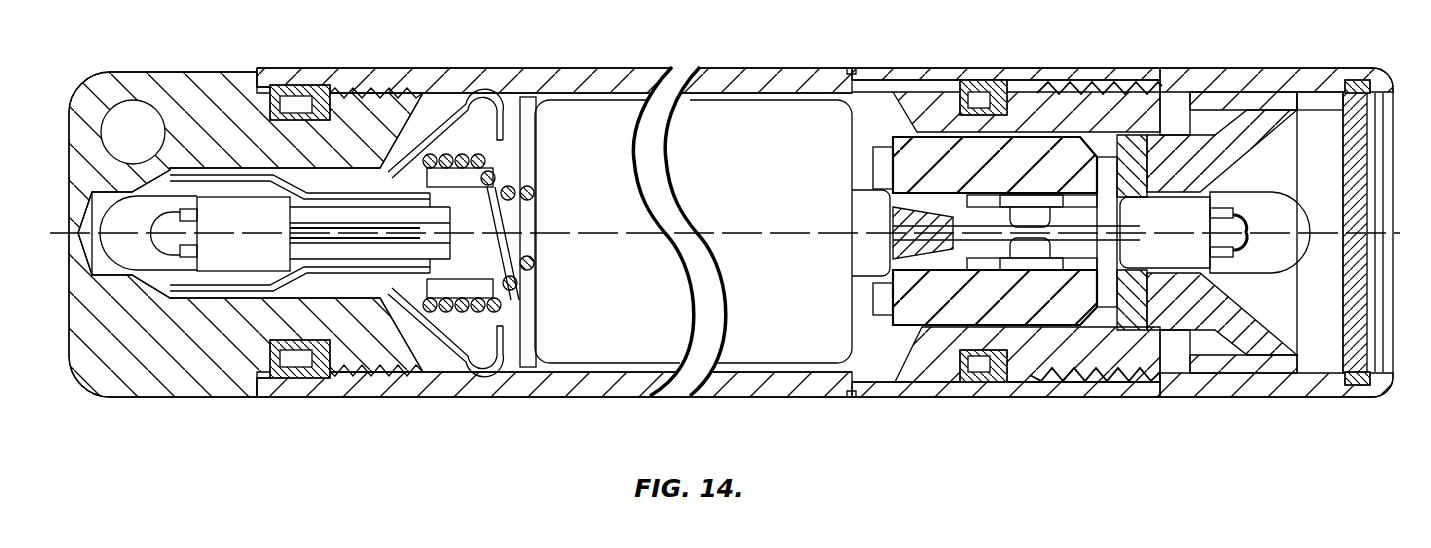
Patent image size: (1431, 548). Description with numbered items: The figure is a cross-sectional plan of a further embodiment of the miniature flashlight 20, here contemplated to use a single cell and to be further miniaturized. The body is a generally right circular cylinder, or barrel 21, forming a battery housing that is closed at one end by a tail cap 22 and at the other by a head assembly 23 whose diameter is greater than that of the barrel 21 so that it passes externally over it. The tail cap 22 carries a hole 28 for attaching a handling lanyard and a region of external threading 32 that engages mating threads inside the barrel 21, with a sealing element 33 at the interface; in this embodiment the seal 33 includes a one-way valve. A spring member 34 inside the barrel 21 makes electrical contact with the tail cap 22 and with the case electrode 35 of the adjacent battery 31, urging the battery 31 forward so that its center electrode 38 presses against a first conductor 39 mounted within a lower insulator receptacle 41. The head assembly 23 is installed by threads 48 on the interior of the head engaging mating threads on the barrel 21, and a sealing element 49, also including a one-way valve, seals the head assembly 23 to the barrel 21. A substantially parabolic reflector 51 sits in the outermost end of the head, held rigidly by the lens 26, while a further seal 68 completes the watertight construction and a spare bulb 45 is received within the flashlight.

The miniature flashlight 20 is at (857, 408).
The barrel 21 is at (790, 68).
The tail cap 22 is at (112, 378).
The head assembly 23 is at (1195, 70).
The lens 26 is at (1365, 152).
The hole 28 is at (121, 114).
The miniature dry cell battery 31 is at (597, 352).
The external threading 32 is at (380, 366).
The sealing element 33 is at (330, 85).
The spring member 34 is at (532, 268).
The case electrode 35 is at (530, 146).
The center electrode 38 is at (863, 200).
The first conductor 39 is at (900, 325).
The lower insulator receptacle 41 is at (1060, 320).
The spare bulb 45 is at (1270, 190).
The threads 48 is at (1080, 85).
The sealing element 49 is at (985, 82).
The substantially parabolic reflector 51 is at (1320, 107).
The seal 68 is at (1360, 85).